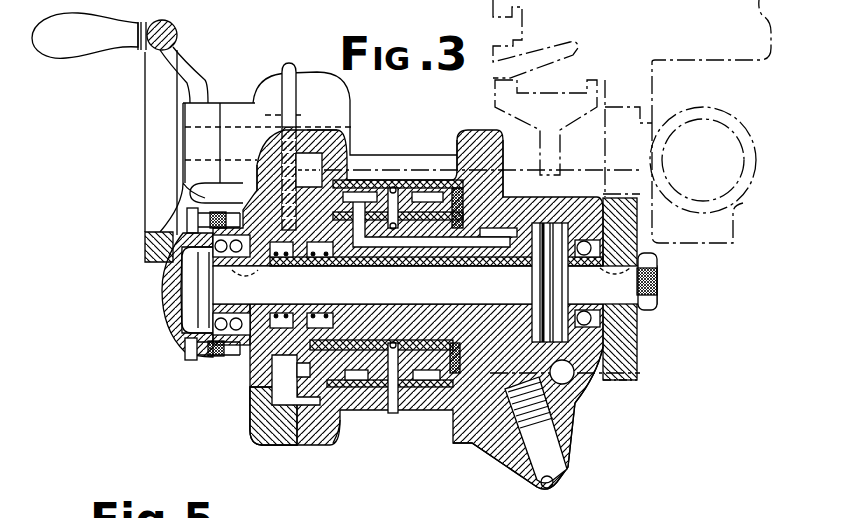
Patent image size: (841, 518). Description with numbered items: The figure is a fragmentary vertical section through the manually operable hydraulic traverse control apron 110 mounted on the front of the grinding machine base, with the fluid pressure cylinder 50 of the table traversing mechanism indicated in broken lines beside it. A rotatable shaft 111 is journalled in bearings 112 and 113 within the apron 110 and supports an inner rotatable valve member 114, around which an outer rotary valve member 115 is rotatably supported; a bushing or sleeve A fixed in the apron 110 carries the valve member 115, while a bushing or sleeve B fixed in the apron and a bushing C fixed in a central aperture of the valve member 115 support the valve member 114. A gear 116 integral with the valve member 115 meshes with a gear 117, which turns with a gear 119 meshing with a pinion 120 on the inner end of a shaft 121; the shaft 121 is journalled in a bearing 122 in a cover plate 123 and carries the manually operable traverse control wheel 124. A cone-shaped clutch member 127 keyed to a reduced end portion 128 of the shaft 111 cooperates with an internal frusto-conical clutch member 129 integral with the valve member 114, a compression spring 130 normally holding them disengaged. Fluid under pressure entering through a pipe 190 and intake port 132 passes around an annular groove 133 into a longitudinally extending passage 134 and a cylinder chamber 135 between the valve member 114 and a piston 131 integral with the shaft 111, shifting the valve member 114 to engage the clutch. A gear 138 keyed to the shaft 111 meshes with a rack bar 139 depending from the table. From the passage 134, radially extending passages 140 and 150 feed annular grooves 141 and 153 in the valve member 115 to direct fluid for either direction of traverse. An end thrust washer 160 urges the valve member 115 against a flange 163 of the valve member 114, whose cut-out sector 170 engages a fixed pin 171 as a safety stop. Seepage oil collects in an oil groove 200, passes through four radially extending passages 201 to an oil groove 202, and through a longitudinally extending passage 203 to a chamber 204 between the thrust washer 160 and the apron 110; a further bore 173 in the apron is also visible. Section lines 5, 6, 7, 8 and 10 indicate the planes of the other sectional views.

The fluid pressure cylinder 50 is at (743, 187).
The traverse control apron 110 is at (497, 438).
The rotatable shaft 111 is at (658, 293).
The bearing 112 is at (212, 362).
The bearing 113 is at (570, 365).
The rotatable valve member 114 is at (472, 318).
The rotary valve member 115 is at (337, 433).
The gear 116 is at (303, 393).
The gear 117 is at (328, 130).
The gear 119 is at (257, 178).
The pinion 120 is at (282, 127).
The rotatable shaft 121 is at (235, 125).
The bearing 122 is at (247, 117).
The cover plate 123 is at (289, 64).
The traverse control wheel 124 is at (150, 130).
The cone-shaped clutch member 127 is at (261, 360).
The reduced end portion 128 is at (223, 285).
The internal frusto-conical clutch member 129 is at (270, 373).
The compression spring 130 is at (290, 313).
The fluid pressure operated piston 131 is at (600, 313).
The intake port 132 is at (536, 430).
The annular groove 133 is at (510, 330).
The longitudinally extending passage 134 is at (453, 252).
The cylinder chamber 135 is at (520, 250).
The gear 138 is at (635, 376).
The rack bar 139 is at (610, 170).
The radially extending passage 140 is at (431, 230).
The annular groove 141 is at (367, 180).
The radially extending passage 150 is at (428, 224).
The annular groove 153 is at (421, 387).
The end thrust washer 160 is at (452, 135).
The flange 163 is at (258, 202).
The cut-out sector 170 is at (294, 380).
The fixed pin 171 is at (288, 372).
The bore 173 is at (557, 373).
The pipe 190 is at (549, 473).
The oil groove 200 is at (388, 415).
The radially extending passages 201 is at (363, 347).
The oil groove 202 is at (392, 343).
The longitudinally extending passage 203 is at (428, 333).
The chamber 204 is at (505, 357).
The section line 5 is at (368, 153).
The section line 6 is at (401, 153).
The section line 7 is at (439, 153).
The section line 8 is at (569, 188).
The section line 10 is at (477, 103).
The bushing A is at (450, 427).
The bushing B is at (585, 428).
The bushing C is at (408, 343).